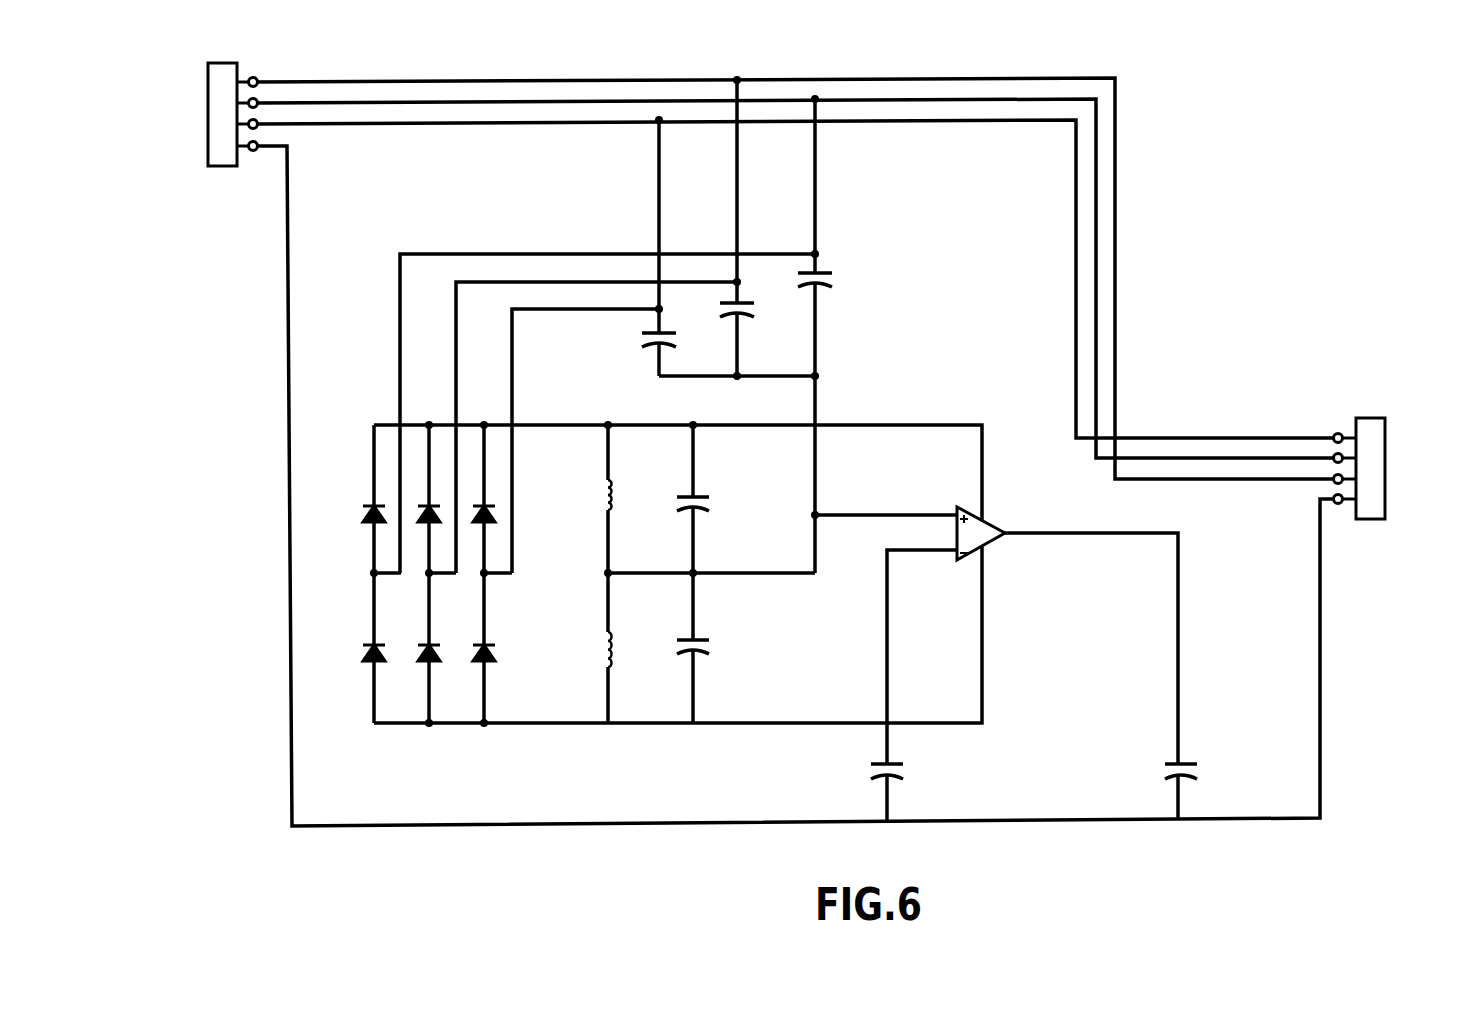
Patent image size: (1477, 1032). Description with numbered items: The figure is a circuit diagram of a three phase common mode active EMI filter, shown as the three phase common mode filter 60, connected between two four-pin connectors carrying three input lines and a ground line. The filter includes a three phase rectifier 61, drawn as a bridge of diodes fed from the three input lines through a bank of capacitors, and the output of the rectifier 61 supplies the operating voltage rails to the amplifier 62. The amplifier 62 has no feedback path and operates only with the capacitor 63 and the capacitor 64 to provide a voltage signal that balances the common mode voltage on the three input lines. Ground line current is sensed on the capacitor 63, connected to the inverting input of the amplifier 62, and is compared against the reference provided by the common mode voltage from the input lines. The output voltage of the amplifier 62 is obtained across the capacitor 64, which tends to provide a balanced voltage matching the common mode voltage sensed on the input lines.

The three phase common mode filter 60 is at (903, 345).
The three phase rectifier 61 is at (517, 604).
The amplifier 62 is at (993, 543).
The capacitor 63 is at (905, 767).
The capacitor 64 is at (1199, 767).